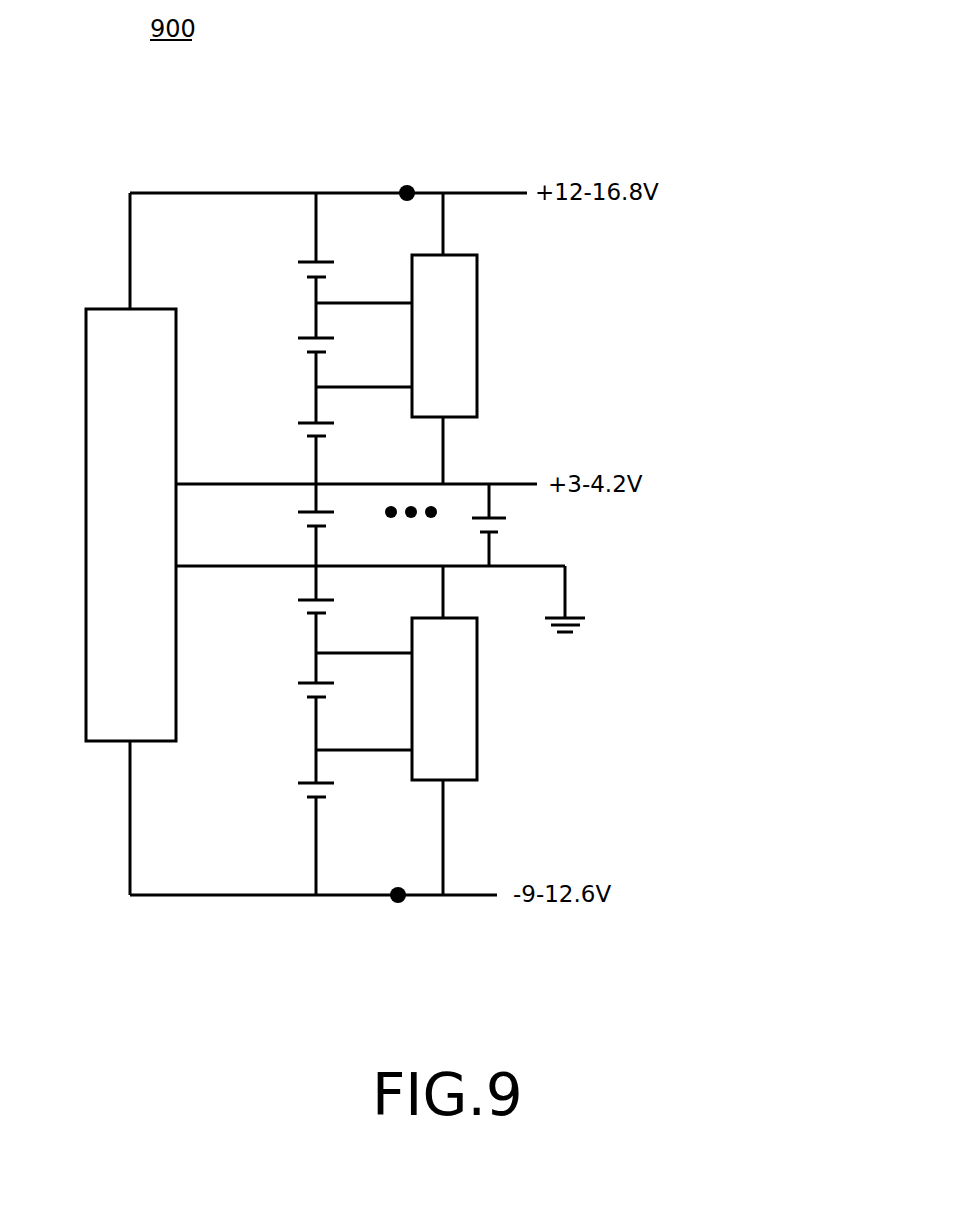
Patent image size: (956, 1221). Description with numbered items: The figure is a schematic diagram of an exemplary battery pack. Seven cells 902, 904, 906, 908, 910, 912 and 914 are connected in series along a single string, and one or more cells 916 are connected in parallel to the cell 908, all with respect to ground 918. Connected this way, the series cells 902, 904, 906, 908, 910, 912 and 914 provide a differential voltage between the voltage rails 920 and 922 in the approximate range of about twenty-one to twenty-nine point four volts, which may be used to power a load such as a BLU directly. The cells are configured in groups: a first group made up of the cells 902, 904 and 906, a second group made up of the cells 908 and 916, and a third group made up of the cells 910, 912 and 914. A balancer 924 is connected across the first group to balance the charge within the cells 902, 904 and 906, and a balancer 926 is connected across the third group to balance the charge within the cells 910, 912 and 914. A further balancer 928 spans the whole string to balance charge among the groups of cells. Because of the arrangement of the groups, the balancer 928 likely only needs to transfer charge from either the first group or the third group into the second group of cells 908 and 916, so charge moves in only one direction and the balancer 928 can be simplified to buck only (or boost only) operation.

The cell 902 is at (298, 272).
The cell 904 is at (298, 347).
The cell 906 is at (298, 432).
The cell 908 is at (298, 519).
The cell 910 is at (298, 607).
The cell 912 is at (298, 690).
The cell 914 is at (298, 795).
The cell 916 is at (509, 524).
The ground 918 is at (583, 628).
The voltage rail 920 is at (407, 185).
The voltage rail 922 is at (398, 903).
The balancer 924 is at (477, 318).
The balancer 926 is at (477, 716).
The balancer 928 is at (100, 498).